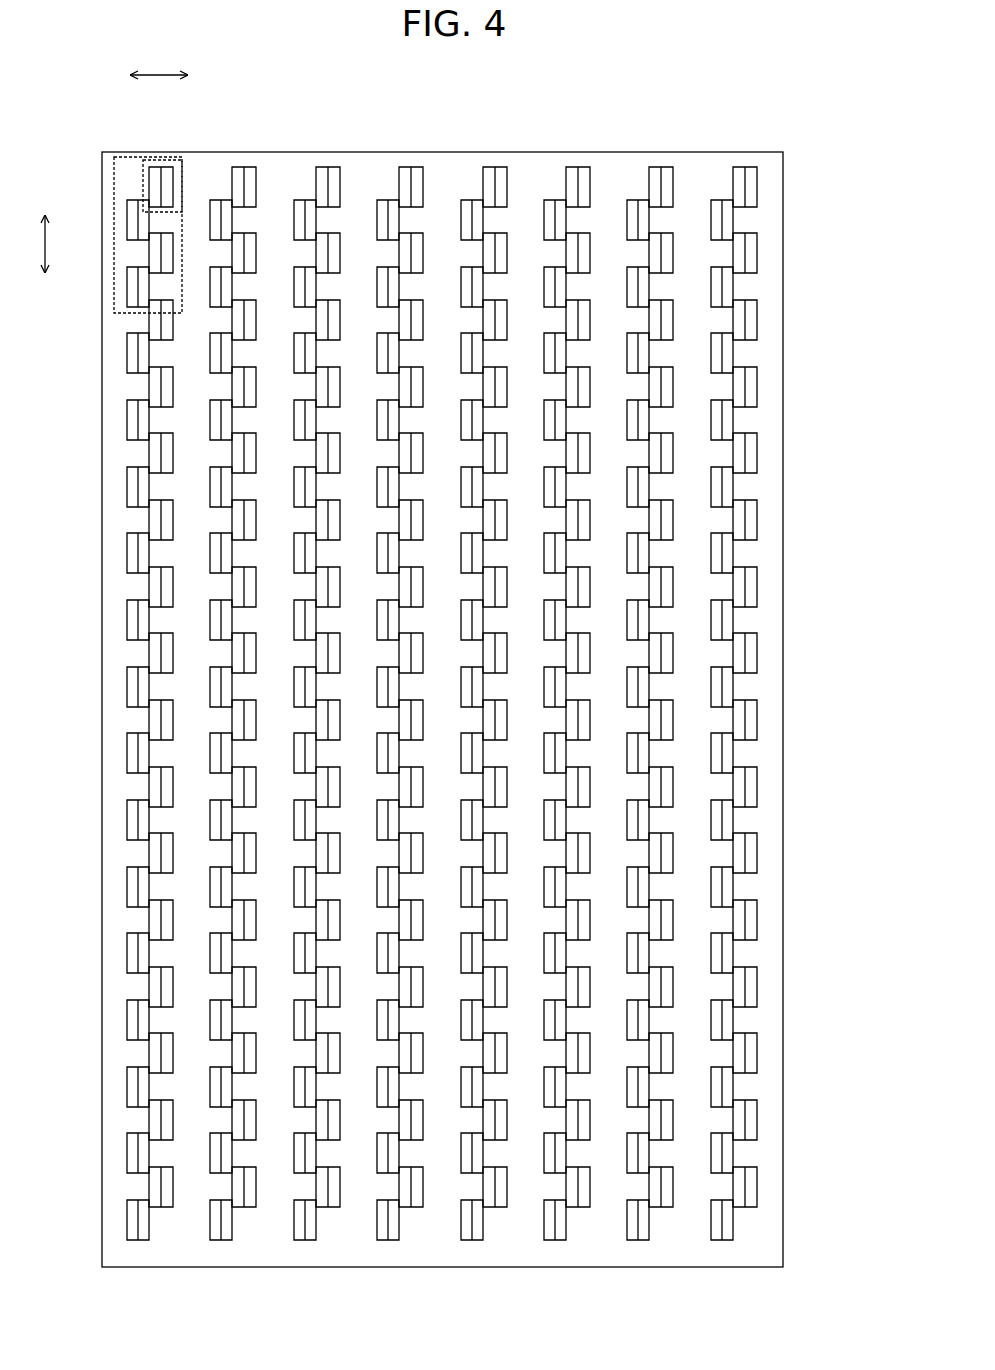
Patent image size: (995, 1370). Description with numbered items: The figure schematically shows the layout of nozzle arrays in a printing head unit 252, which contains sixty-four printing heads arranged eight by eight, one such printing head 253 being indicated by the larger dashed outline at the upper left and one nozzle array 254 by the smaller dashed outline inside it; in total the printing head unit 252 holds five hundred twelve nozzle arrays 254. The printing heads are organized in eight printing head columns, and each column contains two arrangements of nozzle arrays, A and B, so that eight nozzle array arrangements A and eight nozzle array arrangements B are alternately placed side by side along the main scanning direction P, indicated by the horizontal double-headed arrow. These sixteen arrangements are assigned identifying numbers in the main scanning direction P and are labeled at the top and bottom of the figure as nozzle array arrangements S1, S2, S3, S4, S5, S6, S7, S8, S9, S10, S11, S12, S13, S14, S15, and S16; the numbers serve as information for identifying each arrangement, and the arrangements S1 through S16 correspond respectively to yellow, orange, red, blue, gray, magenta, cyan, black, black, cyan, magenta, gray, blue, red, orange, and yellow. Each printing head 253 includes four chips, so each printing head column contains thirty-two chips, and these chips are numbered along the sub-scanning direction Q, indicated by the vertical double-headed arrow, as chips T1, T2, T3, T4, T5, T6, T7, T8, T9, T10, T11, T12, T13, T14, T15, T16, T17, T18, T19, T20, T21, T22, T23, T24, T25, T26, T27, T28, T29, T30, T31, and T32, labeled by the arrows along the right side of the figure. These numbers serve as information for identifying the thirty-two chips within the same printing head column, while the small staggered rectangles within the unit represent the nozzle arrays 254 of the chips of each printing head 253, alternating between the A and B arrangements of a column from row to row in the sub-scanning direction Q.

The printing head unit 252 is at (784, 163).
The printing head 253 is at (115, 227).
The nozzle array 254 is at (142, 188).
The main scanning direction P is at (168, 76).
The sub-scanning direction Q is at (44, 259).
The nozzle array arrangement S1 is at (752, 163).
The nozzle array arrangement S2 is at (739, 163).
The nozzle array arrangement S3 is at (668, 163).
The nozzle array arrangement S4 is at (655, 163).
The nozzle array arrangement S5 is at (585, 163).
The nozzle array arrangement S6 is at (572, 163).
The nozzle array arrangement S7 is at (502, 163).
The nozzle array arrangement S8 is at (489, 163).
The nozzle array arrangement S9 is at (418, 163).
The nozzle array arrangement S10 is at (405, 163).
The nozzle array arrangement S11 is at (335, 163).
The nozzle array arrangement S12 is at (322, 163).
The nozzle array arrangement S13 is at (251, 163).
The nozzle array arrangement S14 is at (238, 163).
The nozzle array arrangement S15 is at (168, 163).
The nozzle array arrangement S16 is at (155, 163).
The chip number T1 is at (768, 1220).
The chip number T2 is at (768, 1187).
The chip number T3 is at (768, 1153).
The chip number T4 is at (768, 1120).
The chip number T5 is at (768, 1087).
The chip number T6 is at (768, 1053).
The chip number T7 is at (768, 1020).
The chip number T8 is at (768, 987).
The chip number T9 is at (768, 953).
The chip number T10 is at (768, 920).
The chip number T11 is at (768, 887).
The chip number T12 is at (768, 853).
The chip number T13 is at (768, 820).
The chip number T14 is at (768, 787).
The chip number T15 is at (768, 753).
The chip number T16 is at (768, 720).
The chip number T17 is at (768, 687).
The chip number T18 is at (768, 653).
The chip number T19 is at (768, 620).
The chip number T20 is at (768, 587).
The chip number T21 is at (768, 553).
The chip number T22 is at (768, 520).
The chip number T23 is at (768, 487).
The chip number T24 is at (768, 453).
The chip number T25 is at (768, 420).
The chip number T26 is at (768, 387).
The chip number T27 is at (768, 353).
The chip number T28 is at (768, 320).
The chip number T29 is at (768, 287).
The chip number T30 is at (768, 253).
The chip number T31 is at (768, 220).
The chip number T32 is at (768, 187).